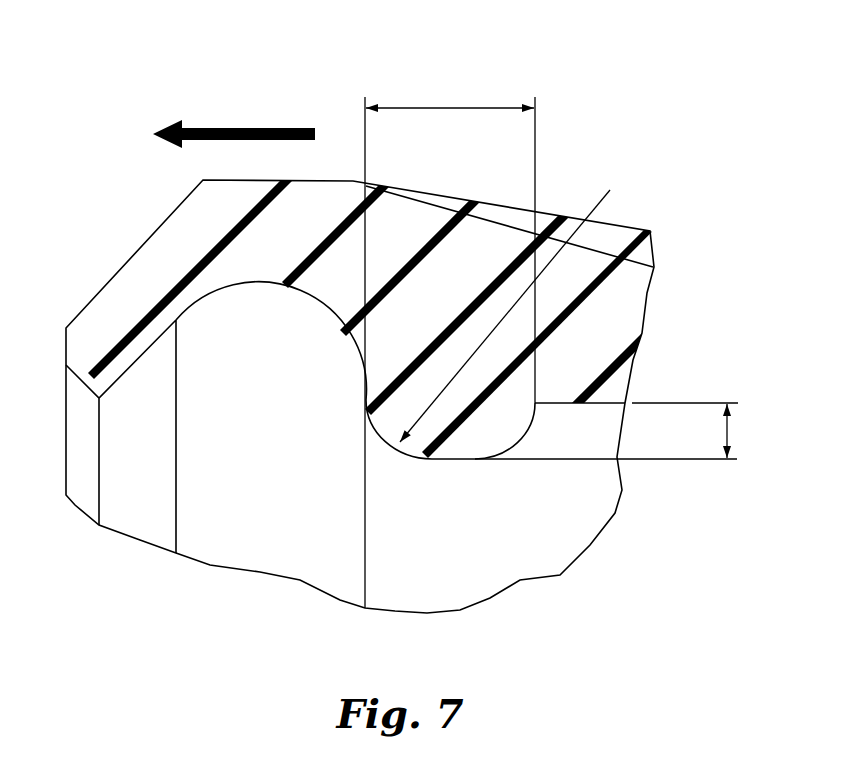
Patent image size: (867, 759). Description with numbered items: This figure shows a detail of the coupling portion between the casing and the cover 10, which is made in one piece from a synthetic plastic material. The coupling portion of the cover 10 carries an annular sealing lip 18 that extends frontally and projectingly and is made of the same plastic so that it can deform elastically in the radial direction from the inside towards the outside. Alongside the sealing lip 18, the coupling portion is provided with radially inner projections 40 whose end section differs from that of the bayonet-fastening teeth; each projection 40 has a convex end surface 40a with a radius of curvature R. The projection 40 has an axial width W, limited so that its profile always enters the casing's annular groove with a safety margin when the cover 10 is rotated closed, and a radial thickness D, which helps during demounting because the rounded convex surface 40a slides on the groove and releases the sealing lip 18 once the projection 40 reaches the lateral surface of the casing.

The cover 10 is at (413, 350).
The annular sealing lip 18 is at (137, 290).
The radially inner projection 40 is at (378, 469).
The convex end surface 40a is at (432, 461).